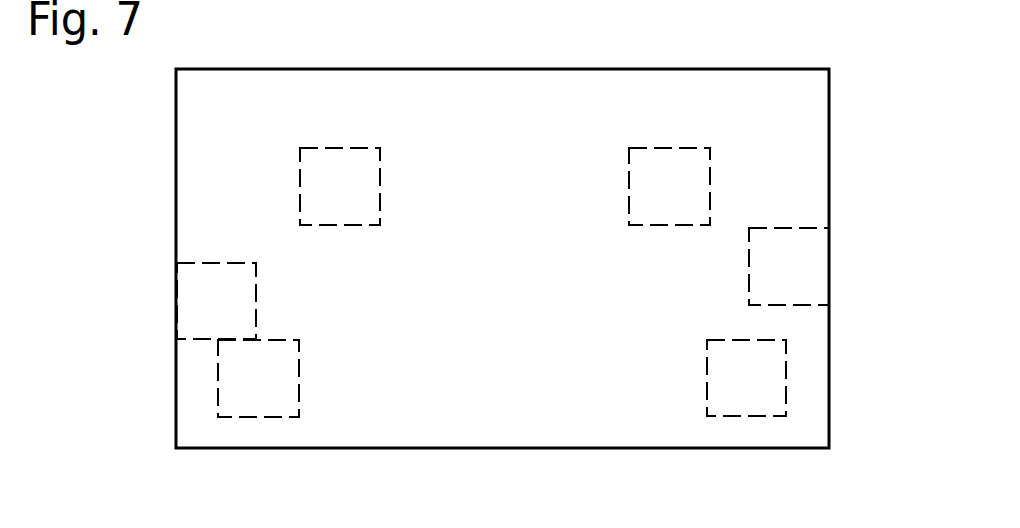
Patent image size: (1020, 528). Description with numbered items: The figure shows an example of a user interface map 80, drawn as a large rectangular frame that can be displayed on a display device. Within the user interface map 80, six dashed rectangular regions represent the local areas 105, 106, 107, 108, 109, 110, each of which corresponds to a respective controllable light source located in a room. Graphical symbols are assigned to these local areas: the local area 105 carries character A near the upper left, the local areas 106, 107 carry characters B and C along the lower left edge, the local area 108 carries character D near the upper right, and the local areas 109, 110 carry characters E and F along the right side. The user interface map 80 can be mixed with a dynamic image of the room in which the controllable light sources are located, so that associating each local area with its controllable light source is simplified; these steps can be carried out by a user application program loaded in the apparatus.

The user interface map 80 is at (155, 165).
The local area 105 is at (362, 148).
The local area 106 is at (205, 261).
The local area 107 is at (218, 377).
The local area 108 is at (648, 148).
The local area 109 is at (803, 227).
The local area 110 is at (786, 373).